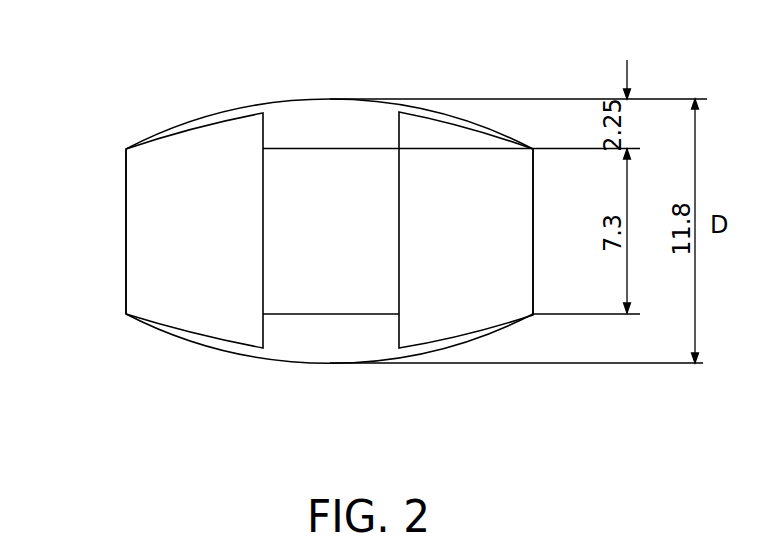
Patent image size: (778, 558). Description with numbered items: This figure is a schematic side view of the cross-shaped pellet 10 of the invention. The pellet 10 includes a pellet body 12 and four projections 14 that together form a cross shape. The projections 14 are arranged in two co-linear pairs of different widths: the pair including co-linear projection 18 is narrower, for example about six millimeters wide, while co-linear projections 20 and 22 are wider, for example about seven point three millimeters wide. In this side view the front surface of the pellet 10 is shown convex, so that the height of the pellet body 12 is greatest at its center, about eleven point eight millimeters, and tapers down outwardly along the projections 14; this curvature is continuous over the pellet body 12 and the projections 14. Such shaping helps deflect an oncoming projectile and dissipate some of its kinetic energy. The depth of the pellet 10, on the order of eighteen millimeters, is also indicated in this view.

The pellet 10 is at (612, 37).
The pellet body 12 is at (330, 99).
The projections 14 is at (127, 233).
The co-linear projection 18 is at (352, 258).
The co-linear projection 20 is at (127, 193).
The co-linear projection 22 is at (534, 272).